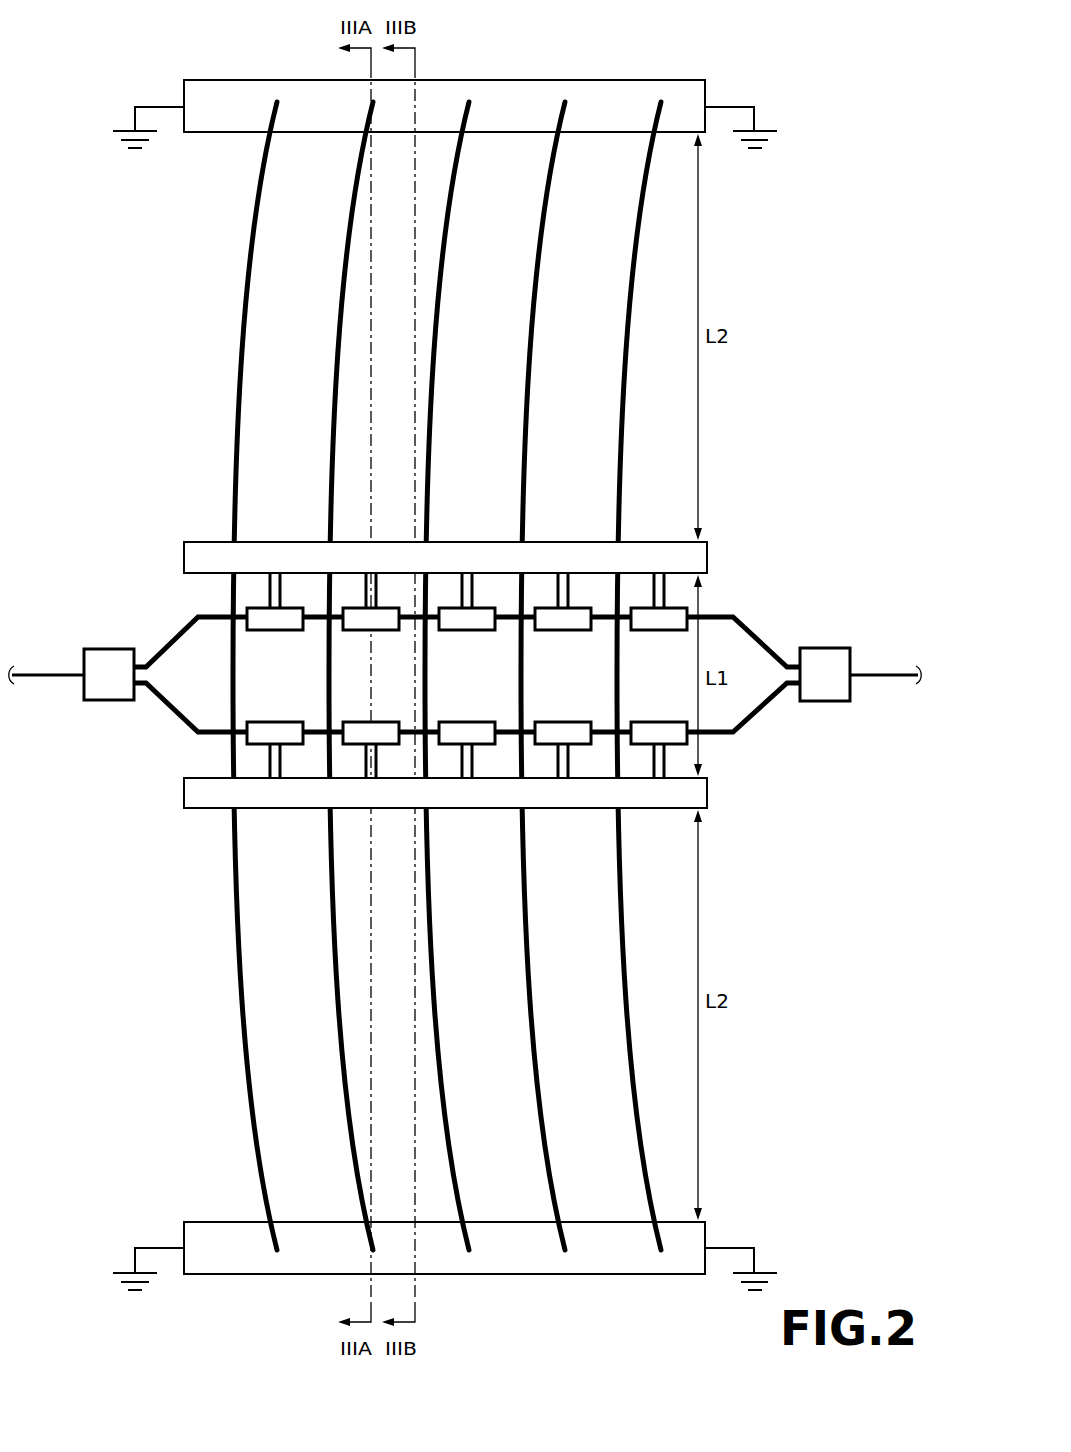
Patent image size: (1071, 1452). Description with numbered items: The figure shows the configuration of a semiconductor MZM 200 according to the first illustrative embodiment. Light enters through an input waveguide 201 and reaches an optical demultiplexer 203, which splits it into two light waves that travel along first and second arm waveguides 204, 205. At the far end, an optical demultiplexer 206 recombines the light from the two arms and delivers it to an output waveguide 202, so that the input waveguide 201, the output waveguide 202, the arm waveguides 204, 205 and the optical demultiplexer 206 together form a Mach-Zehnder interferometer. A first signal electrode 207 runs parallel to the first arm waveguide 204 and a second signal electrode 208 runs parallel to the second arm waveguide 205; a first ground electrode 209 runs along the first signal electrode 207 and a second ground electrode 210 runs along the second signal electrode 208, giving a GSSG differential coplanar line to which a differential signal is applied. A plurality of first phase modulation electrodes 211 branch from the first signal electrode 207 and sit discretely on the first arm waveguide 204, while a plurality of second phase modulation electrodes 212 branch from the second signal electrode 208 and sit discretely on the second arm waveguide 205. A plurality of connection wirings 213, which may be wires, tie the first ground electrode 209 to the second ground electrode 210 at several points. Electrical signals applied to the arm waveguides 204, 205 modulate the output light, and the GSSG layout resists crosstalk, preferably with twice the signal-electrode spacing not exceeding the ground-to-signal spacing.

The semiconductor MZM 200 is at (827, 126).
The input waveguide 201 is at (50, 673).
The output waveguide 202 is at (890, 673).
The optical demultiplexer 203 is at (113, 649).
The first arm waveguide 204 is at (175, 640).
The second arm waveguide 205 is at (175, 710).
The optical demultiplexer 206 is at (830, 648).
The first signal electrode 207 is at (707, 565).
The second signal electrode 208 is at (707, 790).
The first ground electrode 209 is at (706, 91).
The second ground electrode 210 is at (706, 1232).
The first phase modulation electrodes 211 is at (466, 628).
The second phase modulation electrodes 212 is at (562, 728).
The connection wirings 213 is at (231, 705).